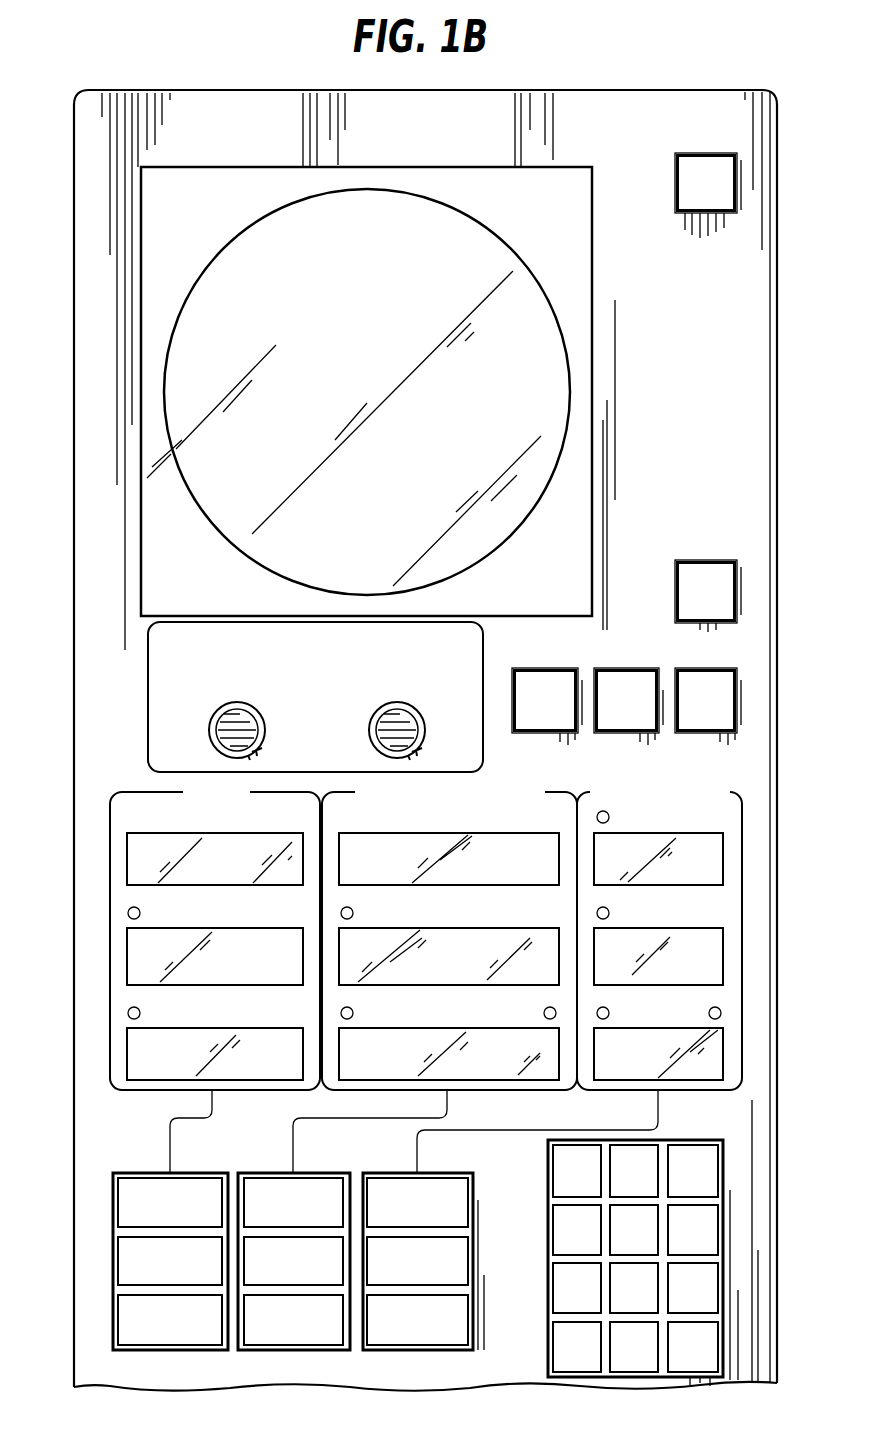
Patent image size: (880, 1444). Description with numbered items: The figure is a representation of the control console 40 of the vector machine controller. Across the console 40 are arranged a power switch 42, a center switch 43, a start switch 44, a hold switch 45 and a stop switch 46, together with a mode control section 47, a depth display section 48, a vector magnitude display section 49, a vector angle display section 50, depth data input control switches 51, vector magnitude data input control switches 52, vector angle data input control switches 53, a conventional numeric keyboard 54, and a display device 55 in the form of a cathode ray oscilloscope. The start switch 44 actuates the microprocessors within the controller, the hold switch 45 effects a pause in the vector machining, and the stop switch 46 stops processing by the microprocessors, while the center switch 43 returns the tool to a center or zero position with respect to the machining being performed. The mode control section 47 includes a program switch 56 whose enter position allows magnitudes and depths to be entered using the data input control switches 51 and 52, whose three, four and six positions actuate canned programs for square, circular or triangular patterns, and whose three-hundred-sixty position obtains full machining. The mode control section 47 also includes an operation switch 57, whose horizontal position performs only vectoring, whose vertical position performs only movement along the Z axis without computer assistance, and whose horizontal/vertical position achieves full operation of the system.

The control console 40 is at (625, 97).
The power switch 42 is at (675, 187).
The center switch 43 is at (705, 560).
The start switch 44 is at (545, 668).
The hold switch 45 is at (628, 668).
The stop switch 46 is at (727, 668).
The mode control section 47 is at (436, 633).
The depth display section 48 is at (128, 805).
The vector magnitude display section 49 is at (548, 806).
The vector angle display section 50 is at (728, 805).
The depth data input control switches 51 is at (142, 1170).
The vector magnitude data input control switches 52 is at (263, 1170).
The vector angle data input control switches 53 is at (458, 1172).
The numeric keyboard 54 is at (723, 1158).
The display device (CRO) 55 is at (378, 383).
The program switch 56 is at (212, 737).
The operation switch 57 is at (380, 737).